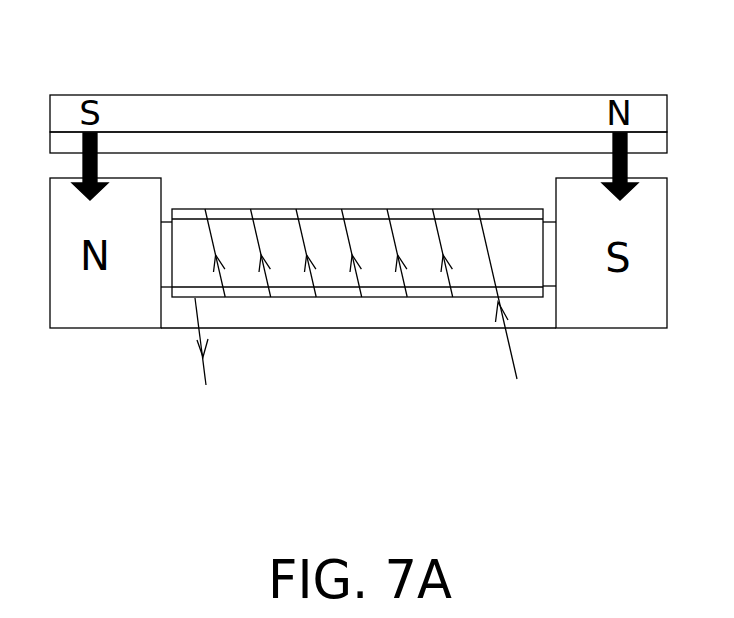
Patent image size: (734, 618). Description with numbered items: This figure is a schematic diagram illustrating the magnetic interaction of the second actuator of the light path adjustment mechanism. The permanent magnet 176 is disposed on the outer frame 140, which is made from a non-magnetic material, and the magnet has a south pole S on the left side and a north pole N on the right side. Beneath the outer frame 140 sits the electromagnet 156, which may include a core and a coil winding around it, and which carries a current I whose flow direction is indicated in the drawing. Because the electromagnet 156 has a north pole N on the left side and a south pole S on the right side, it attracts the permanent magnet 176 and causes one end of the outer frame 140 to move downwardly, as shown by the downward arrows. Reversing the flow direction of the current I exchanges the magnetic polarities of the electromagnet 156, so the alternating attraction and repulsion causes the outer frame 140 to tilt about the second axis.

The outer frame 140 is at (244, 143).
The permanent magnet 176 is at (358, 115).
The electromagnet 156 is at (342, 297).